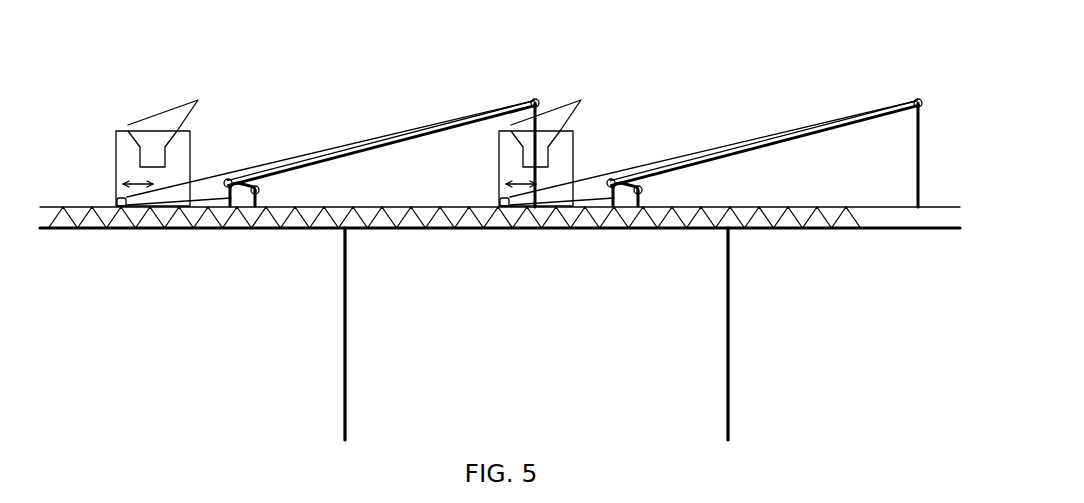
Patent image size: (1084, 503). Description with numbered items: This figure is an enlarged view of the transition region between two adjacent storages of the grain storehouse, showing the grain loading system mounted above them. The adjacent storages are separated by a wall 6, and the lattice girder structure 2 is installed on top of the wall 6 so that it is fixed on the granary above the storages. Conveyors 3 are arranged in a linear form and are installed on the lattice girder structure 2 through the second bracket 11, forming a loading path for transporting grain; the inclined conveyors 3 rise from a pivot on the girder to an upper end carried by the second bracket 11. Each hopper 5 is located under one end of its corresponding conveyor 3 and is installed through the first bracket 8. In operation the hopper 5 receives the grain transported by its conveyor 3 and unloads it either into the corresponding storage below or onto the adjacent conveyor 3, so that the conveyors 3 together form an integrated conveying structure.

The lattice girder structure 2 is at (567, 218).
The conveyor 3 is at (206, 174).
The hopper 5 is at (155, 142).
The wall 6 is at (343, 281).
The first bracket 8 is at (577, 140).
The second bracket 11 is at (917, 158).